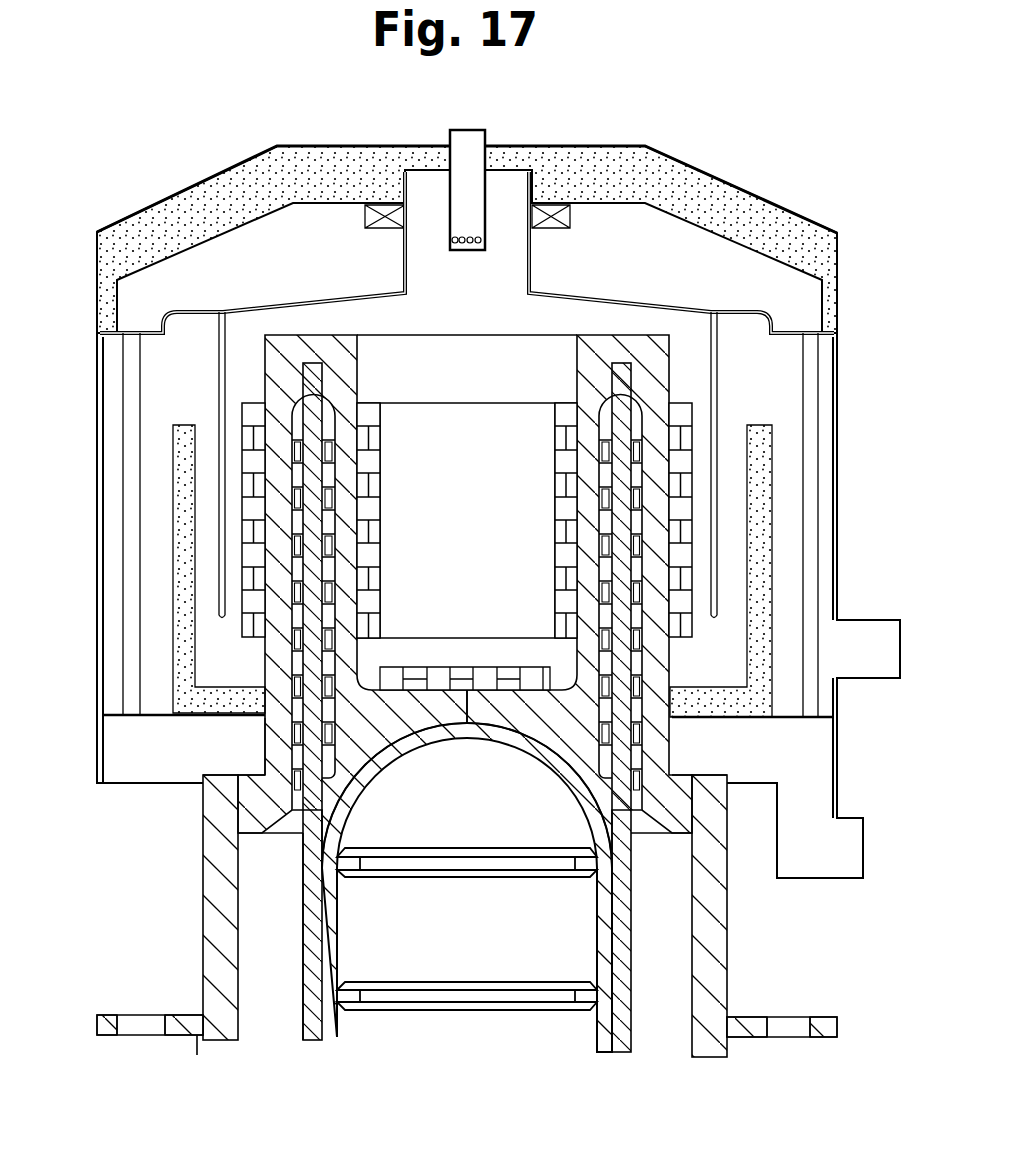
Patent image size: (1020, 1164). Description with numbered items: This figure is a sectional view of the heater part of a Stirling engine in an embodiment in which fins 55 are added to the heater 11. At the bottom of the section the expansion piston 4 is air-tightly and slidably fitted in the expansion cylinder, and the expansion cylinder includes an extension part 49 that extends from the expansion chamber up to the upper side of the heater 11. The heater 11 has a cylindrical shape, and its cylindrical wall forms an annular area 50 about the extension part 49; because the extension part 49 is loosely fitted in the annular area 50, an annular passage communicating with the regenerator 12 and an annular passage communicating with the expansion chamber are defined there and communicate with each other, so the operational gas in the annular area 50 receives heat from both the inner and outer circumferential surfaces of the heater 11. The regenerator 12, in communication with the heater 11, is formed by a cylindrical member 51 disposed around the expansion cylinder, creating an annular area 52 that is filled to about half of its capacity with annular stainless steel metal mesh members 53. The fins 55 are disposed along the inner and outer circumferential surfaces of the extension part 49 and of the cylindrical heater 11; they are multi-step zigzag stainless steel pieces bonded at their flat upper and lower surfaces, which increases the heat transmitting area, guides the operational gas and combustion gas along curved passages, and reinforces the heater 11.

The expansion piston 4 is at (467, 960).
The heater 11 is at (672, 383).
The regenerator 12 is at (727, 946).
The extension part 49 is at (315, 566).
The annular area 50 is at (292, 398).
The cylindrical member 51 is at (223, 1018).
The annular area 52 is at (285, 1018).
The metal mesh members 53 is at (253, 906).
The fins 55 is at (242, 491).